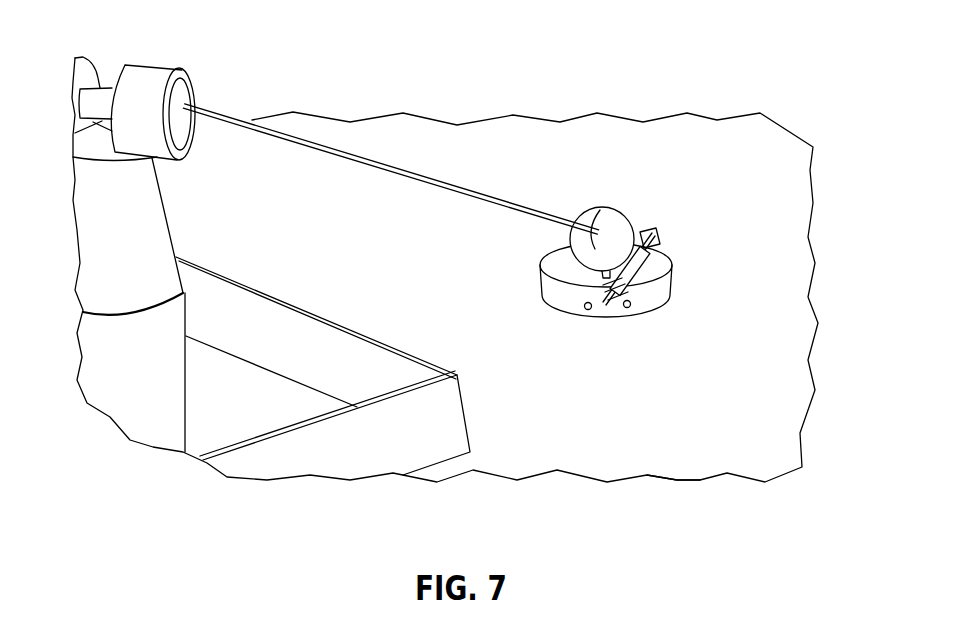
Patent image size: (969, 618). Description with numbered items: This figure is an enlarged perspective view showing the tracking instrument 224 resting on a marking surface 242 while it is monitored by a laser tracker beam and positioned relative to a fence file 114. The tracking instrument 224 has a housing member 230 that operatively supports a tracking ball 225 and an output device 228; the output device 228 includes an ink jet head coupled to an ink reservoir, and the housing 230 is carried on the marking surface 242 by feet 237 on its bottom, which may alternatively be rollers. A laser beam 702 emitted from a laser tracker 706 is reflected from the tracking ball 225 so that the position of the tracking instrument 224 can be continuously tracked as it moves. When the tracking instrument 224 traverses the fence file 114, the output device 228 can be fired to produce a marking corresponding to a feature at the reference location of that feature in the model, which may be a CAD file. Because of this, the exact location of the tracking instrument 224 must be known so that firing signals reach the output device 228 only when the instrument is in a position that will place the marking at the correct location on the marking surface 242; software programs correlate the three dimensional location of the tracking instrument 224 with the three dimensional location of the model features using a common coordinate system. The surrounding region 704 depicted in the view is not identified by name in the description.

The laser tracker 706 is at (183, 103).
The laser beam 702 is at (452, 193).
The tracking ball 225 is at (600, 210).
The tracking instrument 224 is at (614, 266).
The housing member 230 is at (665, 275).
The output device 228 is at (627, 275).
The feet 237 is at (597, 275).
The fence file 114 is at (450, 420).
The work surface 704 is at (783, 393).
The marking surface 242 is at (660, 443).